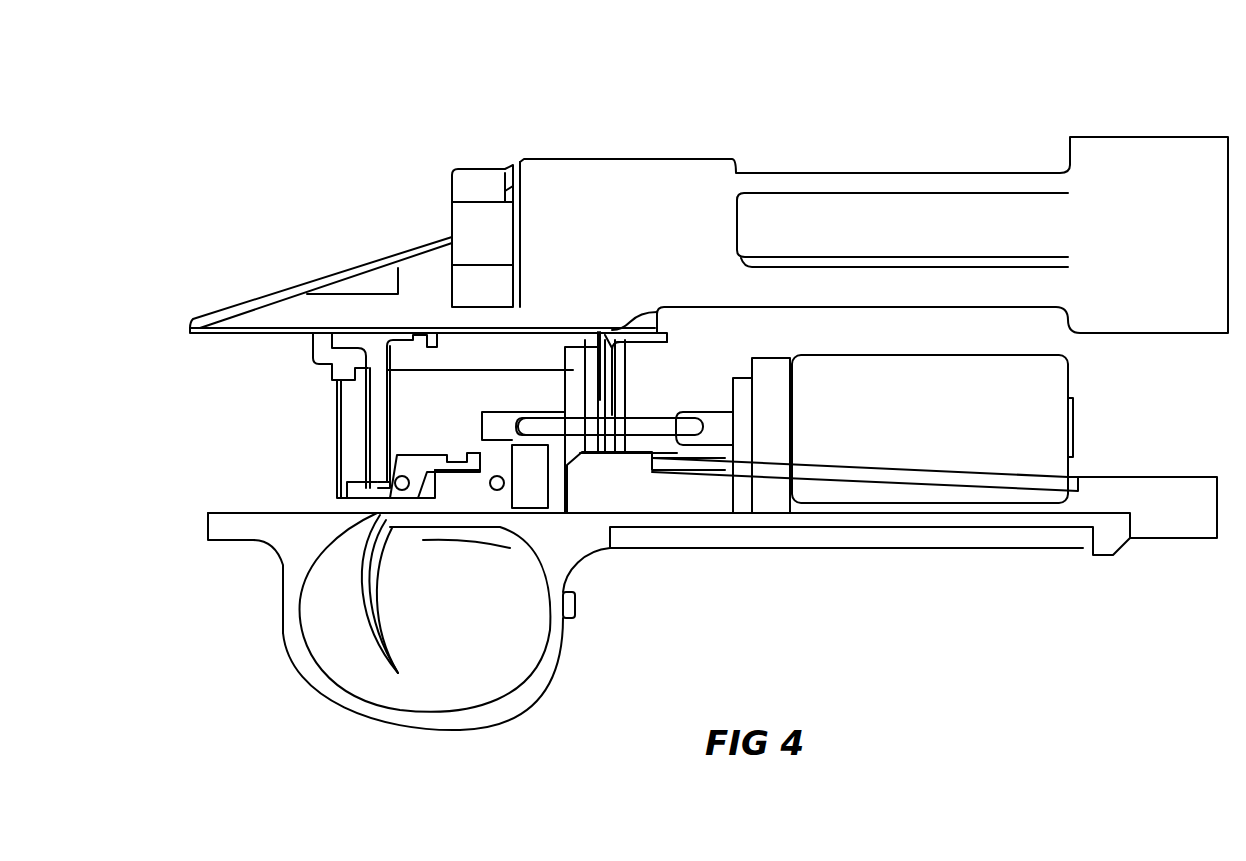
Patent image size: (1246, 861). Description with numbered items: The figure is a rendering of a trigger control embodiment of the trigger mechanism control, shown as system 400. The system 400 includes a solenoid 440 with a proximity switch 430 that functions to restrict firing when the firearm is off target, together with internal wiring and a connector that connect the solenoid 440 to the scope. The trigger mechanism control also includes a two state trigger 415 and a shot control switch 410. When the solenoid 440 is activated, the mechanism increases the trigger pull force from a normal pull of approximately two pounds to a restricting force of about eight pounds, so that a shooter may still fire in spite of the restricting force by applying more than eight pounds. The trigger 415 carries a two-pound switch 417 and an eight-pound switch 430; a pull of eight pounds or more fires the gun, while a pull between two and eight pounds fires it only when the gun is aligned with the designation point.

The system 400 is at (340, 116).
The shot control switch 410 is at (582, 603).
The two state trigger 415 is at (472, 490).
The 2 lbs switch 417 is at (412, 465).
The proximity switch 430 is at (715, 430).
The solenoid 440 is at (955, 442).